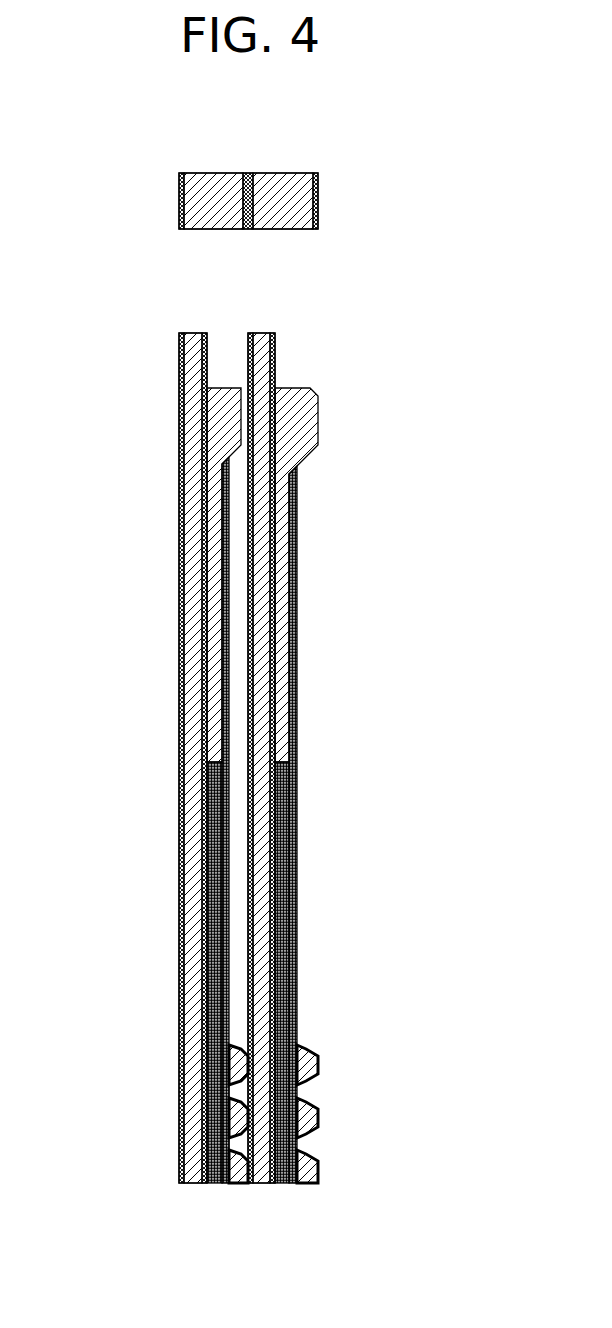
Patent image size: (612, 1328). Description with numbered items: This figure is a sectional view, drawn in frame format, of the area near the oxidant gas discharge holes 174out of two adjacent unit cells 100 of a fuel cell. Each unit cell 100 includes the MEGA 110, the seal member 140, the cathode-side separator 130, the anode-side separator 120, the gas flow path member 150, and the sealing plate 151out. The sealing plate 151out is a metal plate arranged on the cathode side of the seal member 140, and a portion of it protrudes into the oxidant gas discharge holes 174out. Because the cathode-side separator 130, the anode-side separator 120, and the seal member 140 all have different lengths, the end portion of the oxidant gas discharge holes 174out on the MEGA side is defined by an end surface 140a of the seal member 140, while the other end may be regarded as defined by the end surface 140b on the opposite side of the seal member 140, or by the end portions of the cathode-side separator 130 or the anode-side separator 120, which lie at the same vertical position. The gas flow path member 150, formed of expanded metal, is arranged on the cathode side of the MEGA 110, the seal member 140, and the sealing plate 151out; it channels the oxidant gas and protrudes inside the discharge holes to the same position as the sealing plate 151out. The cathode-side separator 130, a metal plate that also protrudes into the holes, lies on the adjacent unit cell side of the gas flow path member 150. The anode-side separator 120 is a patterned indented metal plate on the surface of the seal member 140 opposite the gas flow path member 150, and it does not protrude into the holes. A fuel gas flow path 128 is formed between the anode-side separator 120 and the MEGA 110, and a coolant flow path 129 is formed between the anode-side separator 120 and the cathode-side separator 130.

The unit cell 100 is at (247, 171).
The MEGA 110 is at (180, 984).
The anode-side separator 120 is at (180, 716).
The fuel gas flow path 128 is at (180, 1058).
The coolant flow path 129 is at (180, 1083).
The cathode-side separator 130 is at (180, 574).
The seal member 140 is at (180, 452).
The end surface of the seal member 140a is at (288, 377).
The end surface on the opposite side of the seal member 140b is at (291, 236).
The gas flow path member 150 is at (180, 650).
The sealing plate 151out is at (200, 502).
The oxidant gas discharge hole 174out is at (343, 230).